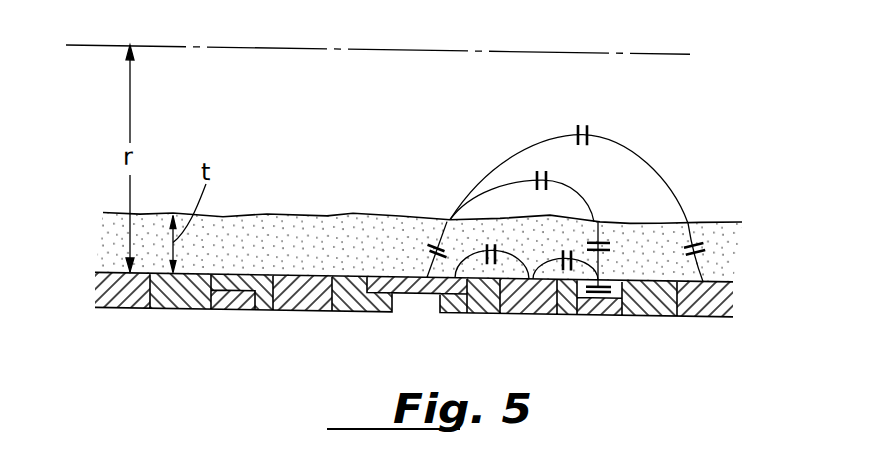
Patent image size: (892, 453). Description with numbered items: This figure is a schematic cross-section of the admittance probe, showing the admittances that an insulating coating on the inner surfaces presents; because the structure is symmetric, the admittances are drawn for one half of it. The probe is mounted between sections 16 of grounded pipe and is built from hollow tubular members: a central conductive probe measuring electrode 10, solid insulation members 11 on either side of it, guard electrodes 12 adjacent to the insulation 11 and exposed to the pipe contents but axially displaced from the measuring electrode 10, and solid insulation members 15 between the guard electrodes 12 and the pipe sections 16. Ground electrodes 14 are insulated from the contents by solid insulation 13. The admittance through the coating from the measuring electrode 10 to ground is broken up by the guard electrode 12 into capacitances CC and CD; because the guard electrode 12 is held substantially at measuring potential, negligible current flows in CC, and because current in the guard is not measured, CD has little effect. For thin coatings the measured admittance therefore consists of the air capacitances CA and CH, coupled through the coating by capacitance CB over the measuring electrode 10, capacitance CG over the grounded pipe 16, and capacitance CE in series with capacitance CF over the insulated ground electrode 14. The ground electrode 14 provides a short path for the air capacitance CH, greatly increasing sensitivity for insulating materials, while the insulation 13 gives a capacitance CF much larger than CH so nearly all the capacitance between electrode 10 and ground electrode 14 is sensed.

The probe measuring electrode 10 is at (417, 287).
The solid insulation member 11 is at (473, 328).
The guard electrode 12 is at (530, 328).
The solid insulation 13 is at (568, 328).
The ground electrode 14 is at (603, 328).
The solid insulation member 15 is at (653, 328).
The pipe section 16 is at (707, 328).
The air capacitance CA is at (589, 126).
The coating capacitance over the probe measuring electrode CB is at (427, 240).
The coating capacitance from measuring electrode to guard CC is at (497, 243).
The coating capacitance from guard electrode to ground CD is at (563, 249).
The coating capacitance over the insulated ground electrode CE is at (612, 241).
The insulation capacitance CF is at (605, 284).
The coating capacitance over the grounded pipe CG is at (707, 240).
The air capacitance to ground electrode CH is at (548, 170).